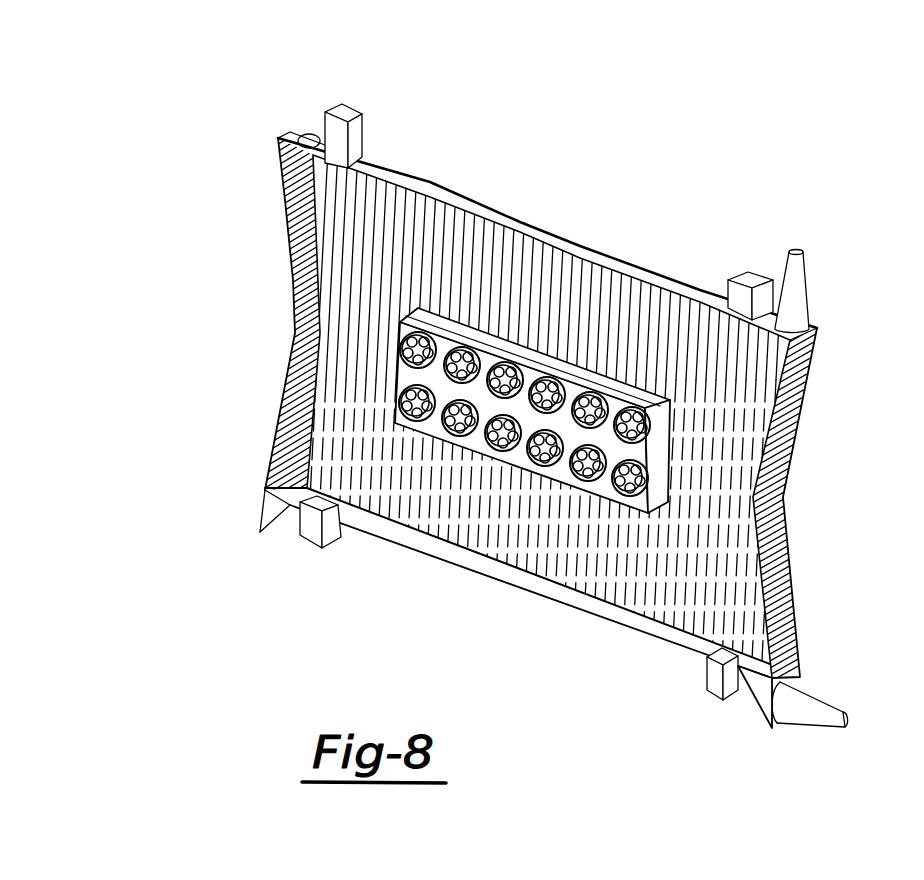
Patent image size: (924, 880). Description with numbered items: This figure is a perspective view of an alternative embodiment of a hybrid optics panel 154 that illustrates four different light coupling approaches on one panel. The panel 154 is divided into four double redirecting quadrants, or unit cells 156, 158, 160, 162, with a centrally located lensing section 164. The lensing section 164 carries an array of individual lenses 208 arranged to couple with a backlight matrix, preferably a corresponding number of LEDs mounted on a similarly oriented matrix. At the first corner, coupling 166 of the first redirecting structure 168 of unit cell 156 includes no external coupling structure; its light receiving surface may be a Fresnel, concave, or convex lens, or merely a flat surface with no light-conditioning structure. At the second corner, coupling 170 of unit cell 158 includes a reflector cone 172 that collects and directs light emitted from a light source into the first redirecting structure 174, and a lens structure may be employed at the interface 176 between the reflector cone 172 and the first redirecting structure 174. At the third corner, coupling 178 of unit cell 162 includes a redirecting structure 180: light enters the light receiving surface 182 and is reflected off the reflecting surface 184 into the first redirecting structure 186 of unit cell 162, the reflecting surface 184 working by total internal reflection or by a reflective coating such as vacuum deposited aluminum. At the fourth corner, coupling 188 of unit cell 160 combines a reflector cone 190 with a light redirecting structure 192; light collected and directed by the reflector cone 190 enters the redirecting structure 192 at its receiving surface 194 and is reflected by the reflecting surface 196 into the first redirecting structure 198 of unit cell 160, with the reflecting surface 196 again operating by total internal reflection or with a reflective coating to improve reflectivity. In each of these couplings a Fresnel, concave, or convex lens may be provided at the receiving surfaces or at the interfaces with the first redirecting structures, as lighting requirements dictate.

The hybrid optics panel 154 is at (615, 238).
The unit cell 156 is at (410, 178).
The unit cell 158 is at (645, 273).
The unit cell 160 is at (650, 632).
The unit cell 162 is at (424, 555).
The lensing section 164 is at (523, 462).
The coupling 166 is at (306, 133).
The first redirecting structure 168 is at (292, 262).
The coupling 170 is at (810, 318).
The reflector cone 172 is at (800, 254).
The first redirecting structure 174 is at (810, 386).
The interface 176 is at (793, 331).
The coupling 178 is at (272, 548).
The redirecting structure 180 is at (258, 538).
The light receiving surface 182 is at (262, 518).
The reflecting surface 184 is at (310, 552).
The first redirecting structure 186 is at (276, 431).
The coupling 188 is at (816, 678).
The reflector cone 190 is at (842, 730).
The light redirecting structure 192 is at (771, 730).
The receiving surface 194 is at (790, 713).
The reflecting surface 196 is at (757, 706).
The first redirecting structure 198 is at (795, 583).
The individual lenses 208 is at (520, 362).